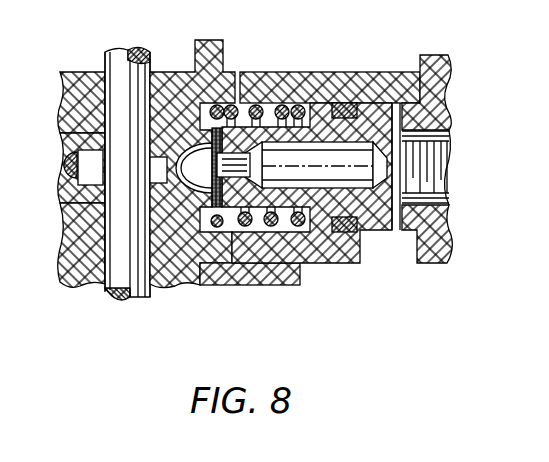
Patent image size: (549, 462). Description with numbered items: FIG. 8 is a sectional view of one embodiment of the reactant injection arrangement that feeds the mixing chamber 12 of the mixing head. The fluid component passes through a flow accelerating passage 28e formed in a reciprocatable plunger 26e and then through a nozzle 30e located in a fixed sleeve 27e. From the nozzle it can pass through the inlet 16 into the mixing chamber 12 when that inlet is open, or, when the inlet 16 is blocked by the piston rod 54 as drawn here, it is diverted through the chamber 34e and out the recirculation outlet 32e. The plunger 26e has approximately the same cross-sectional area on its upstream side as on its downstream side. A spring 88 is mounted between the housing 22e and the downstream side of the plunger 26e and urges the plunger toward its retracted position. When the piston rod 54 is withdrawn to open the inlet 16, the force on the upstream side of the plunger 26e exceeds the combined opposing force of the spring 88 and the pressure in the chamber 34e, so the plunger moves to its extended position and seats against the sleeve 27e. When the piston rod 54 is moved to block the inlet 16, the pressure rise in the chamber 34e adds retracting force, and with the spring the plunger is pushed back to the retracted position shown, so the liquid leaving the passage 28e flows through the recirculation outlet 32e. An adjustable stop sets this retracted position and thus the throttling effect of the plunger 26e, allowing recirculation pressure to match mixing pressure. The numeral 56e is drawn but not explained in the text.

The mixing chamber 12 is at (103, 226).
The inlet opening 16 is at (112, 210).
The housing 22e is at (352, 50).
The reciprocatable plunger 26e is at (316, 220).
The fixed sleeve 27e is at (202, 193).
The flow accelerating passage 28e is at (368, 180).
The nozzle 30e is at (173, 150).
The recirculation outlet 32e is at (237, 78).
The chamber 34e is at (186, 150).
The piston rod 54 is at (111, 104).
The stem 56e is at (243, 187).
The spring 88 is at (255, 104).